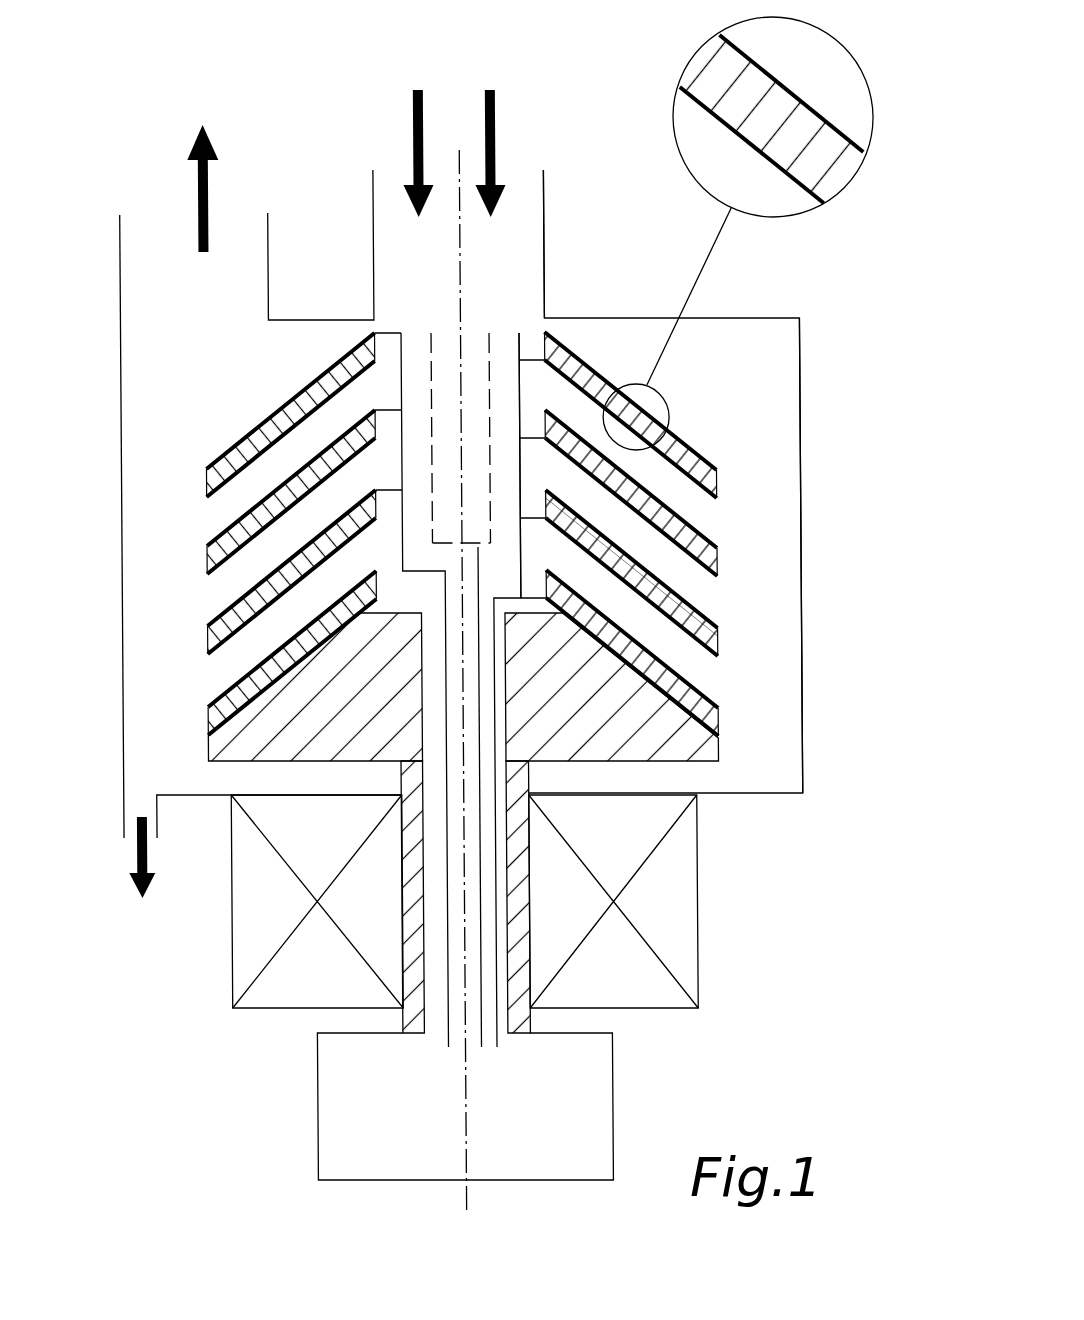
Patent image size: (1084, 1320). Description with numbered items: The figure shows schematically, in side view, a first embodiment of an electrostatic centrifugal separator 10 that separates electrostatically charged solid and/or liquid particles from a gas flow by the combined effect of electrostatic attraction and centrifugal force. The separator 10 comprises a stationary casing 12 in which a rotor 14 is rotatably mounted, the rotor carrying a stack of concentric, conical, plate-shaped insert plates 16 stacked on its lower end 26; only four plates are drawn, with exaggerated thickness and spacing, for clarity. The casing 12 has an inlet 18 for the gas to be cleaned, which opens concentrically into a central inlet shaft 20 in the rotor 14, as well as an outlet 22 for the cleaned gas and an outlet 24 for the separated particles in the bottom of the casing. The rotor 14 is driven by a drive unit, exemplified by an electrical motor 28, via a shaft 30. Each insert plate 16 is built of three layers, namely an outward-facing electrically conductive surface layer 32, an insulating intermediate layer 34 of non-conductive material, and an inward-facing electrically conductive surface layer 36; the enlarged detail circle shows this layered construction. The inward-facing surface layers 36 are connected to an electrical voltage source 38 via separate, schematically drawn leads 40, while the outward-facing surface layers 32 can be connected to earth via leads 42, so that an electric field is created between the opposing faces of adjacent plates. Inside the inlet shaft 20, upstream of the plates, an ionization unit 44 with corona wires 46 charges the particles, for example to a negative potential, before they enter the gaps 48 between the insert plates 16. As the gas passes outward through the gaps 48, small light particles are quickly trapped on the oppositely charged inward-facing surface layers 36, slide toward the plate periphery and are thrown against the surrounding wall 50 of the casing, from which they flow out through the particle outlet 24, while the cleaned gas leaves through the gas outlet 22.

The centrifugal separator 10 is at (845, 446).
The stationary casing 12 is at (768, 318).
The rotor 14 is at (230, 418).
The insert plates 16 is at (692, 440).
The inlet 18 is at (508, 258).
The central inlet shaft 20 is at (502, 386).
The outlet for gas 22 is at (228, 262).
The outlet for particles 24 is at (148, 835).
The lower end 26 is at (650, 728).
The electrical motor 28 is at (682, 920).
The shaft 30 is at (518, 808).
The outward-facing electrically-conductive surface layer 32 is at (770, 67).
The insulating intermediate layer 34 is at (808, 138).
The inward-facing electrically-conductive surface layer 36 is at (727, 126).
The electrical voltage source 38 is at (592, 1078).
The leads 40 is at (518, 540).
The leads 42 is at (403, 522).
The ionization unit 44 is at (422, 334).
The corona wires 46 is at (432, 385).
The gaps 48 is at (218, 512).
The surrounding wall 50 is at (802, 592).